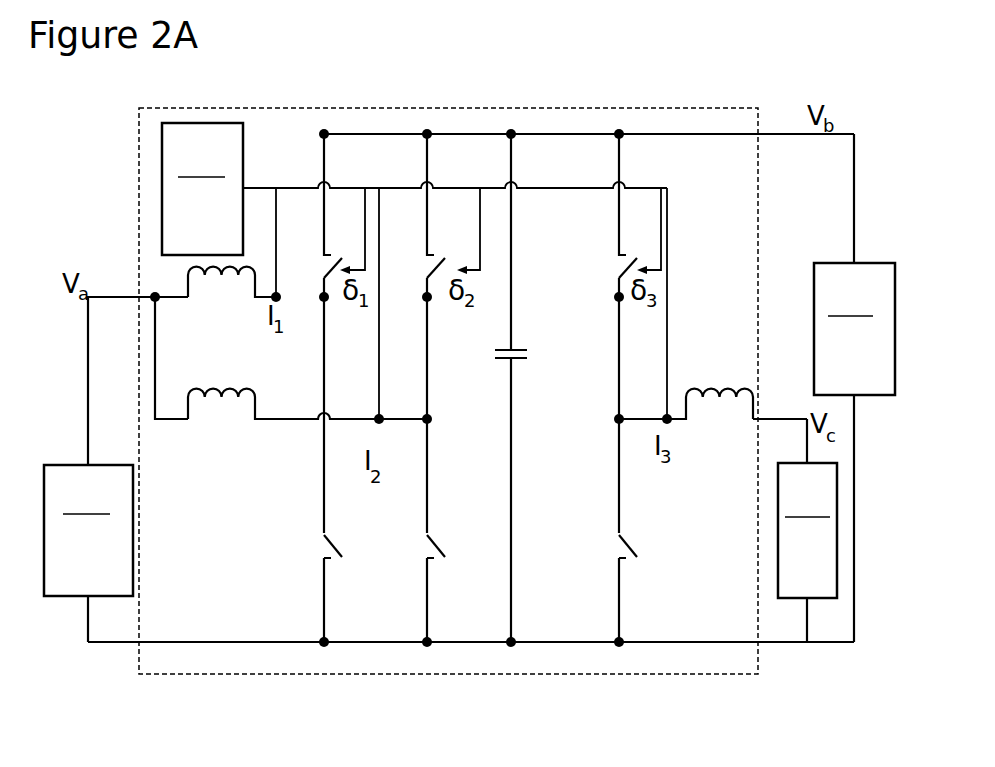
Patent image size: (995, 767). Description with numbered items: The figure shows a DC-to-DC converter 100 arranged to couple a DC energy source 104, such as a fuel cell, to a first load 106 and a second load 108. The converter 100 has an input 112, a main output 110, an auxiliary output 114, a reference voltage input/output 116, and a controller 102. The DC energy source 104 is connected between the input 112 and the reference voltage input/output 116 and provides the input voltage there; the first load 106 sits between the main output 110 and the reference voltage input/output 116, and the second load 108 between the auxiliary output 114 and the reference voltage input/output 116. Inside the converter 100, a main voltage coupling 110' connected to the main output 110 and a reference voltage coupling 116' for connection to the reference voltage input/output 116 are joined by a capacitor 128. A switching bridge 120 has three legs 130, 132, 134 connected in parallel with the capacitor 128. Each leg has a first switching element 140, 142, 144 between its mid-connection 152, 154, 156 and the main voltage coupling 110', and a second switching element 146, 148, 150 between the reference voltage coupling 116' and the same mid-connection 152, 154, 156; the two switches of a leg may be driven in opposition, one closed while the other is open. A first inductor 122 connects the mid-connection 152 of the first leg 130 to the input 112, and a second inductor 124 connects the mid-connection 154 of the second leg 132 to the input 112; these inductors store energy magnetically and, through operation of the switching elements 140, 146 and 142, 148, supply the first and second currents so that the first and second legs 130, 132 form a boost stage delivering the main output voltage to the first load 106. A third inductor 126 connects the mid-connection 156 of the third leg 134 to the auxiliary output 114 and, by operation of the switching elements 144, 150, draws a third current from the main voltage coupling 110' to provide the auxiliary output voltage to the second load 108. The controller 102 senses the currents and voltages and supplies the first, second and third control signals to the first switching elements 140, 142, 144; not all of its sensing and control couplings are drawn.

The DC-to-DC converter 100 is at (285, 674).
The controller 102 is at (414, 271).
The DC energy source 104 is at (99, 469).
The first load 106 is at (854, 388).
The second load 108 is at (807, 530).
The main output 110 is at (589, 92).
The main voltage coupling 110' is at (688, 176).
The input 112 is at (150, 294).
The auxiliary output 114 is at (758, 418).
The reference voltage input/output 116 is at (468, 679).
The reference voltage coupling 116' is at (471, 592).
The switching bridge 120 is at (448, 661).
The first inductor 122 is at (196, 290).
The second inductor 124 is at (196, 412).
The third inductor 126 is at (710, 388).
The capacitor 128 is at (522, 350).
The first leg 130 is at (329, 166).
The second leg 132 is at (430, 166).
The third leg 134 is at (619, 166).
The first switching element 140 is at (326, 278).
The first switching element 142 is at (428, 278).
The first switching element 144 is at (619, 278).
The second switching element 146 is at (327, 543).
The second switching element 148 is at (430, 543).
The second switching element 150 is at (620, 543).
The mid-connection 152 is at (323, 303).
The mid-connection 154 is at (428, 416).
The mid-connection 156 is at (617, 417).